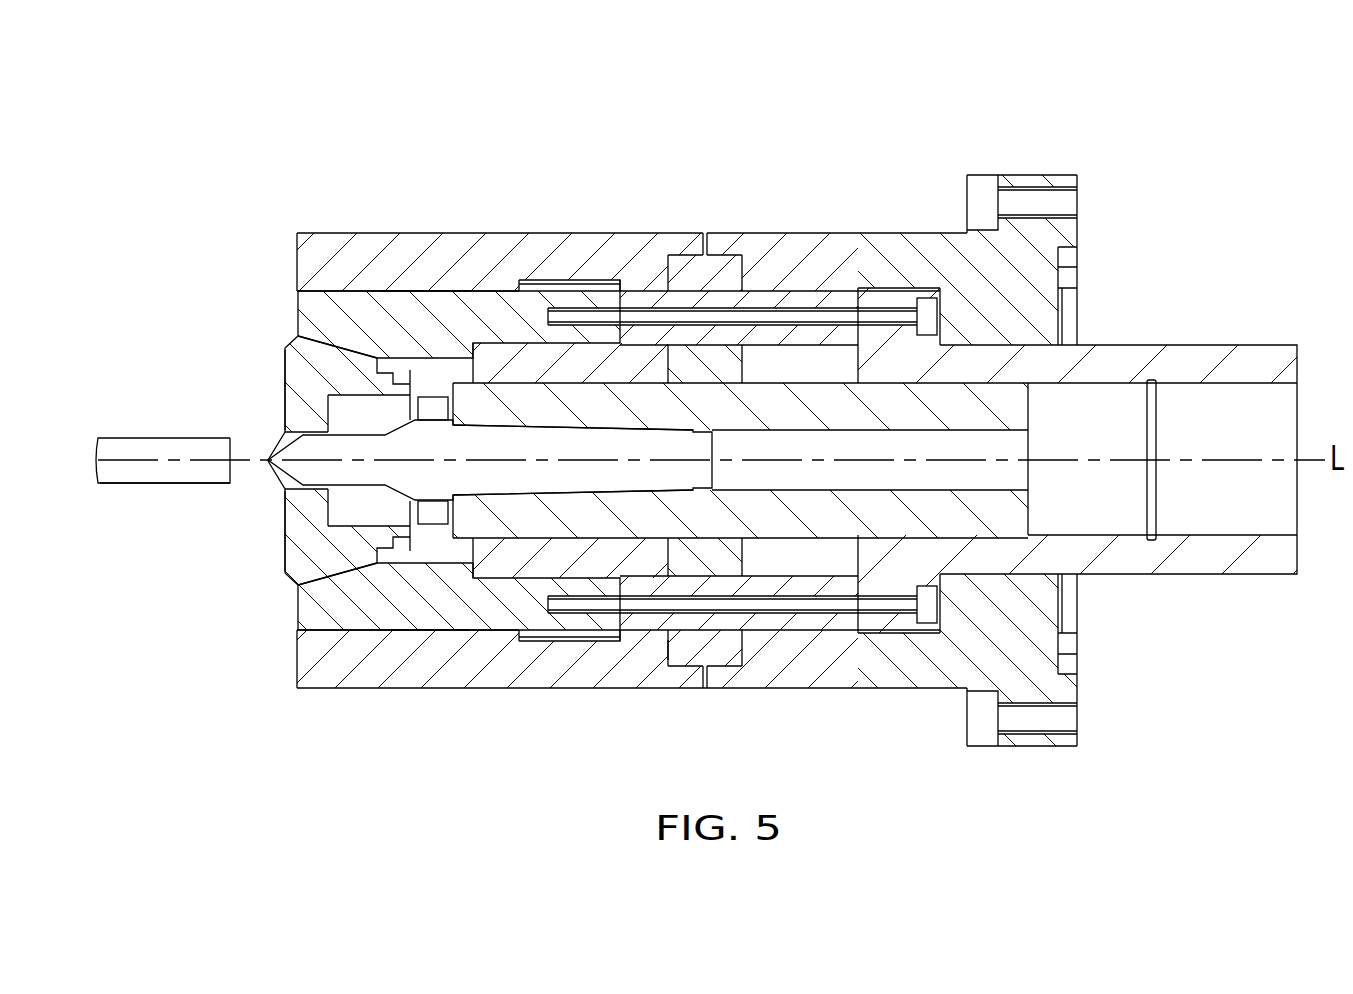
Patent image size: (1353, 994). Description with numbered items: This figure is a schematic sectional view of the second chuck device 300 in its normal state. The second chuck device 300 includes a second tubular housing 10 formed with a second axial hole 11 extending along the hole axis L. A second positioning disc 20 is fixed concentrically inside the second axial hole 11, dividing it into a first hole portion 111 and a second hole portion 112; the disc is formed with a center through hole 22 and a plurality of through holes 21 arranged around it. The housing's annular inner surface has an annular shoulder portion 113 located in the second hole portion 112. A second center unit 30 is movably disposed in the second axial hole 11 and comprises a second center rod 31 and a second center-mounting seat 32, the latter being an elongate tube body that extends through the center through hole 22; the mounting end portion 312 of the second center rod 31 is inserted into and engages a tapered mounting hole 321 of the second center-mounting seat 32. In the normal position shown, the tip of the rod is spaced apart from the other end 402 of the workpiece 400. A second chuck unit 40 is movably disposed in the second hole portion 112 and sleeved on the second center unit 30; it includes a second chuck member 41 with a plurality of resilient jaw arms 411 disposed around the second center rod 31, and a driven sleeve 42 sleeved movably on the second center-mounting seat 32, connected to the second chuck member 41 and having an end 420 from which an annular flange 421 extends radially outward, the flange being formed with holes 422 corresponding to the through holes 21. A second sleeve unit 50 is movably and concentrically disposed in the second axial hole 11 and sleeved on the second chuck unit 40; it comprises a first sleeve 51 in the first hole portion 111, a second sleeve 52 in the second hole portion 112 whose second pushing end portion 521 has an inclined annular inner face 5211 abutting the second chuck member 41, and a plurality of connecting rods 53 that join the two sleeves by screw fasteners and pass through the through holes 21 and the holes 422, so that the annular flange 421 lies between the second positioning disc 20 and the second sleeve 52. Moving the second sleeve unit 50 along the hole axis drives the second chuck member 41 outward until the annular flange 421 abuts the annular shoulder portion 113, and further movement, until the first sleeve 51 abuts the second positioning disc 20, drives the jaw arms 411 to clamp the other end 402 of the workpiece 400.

The second chuck device 300 is at (1083, 163).
The second tubular housing 10 is at (632, 404).
The second axial hole 11 is at (951, 427).
The first hole portion 111 is at (910, 288).
The second hole portion 112 is at (487, 287).
The annular shoulder portion 113 is at (547, 283).
The second positioning disc 20 is at (733, 396).
The through holes 21 is at (718, 290).
The center through hole 22 is at (723, 363).
The second center unit 30 is at (473, 492).
The second center rod 31 is at (403, 423).
The mounting end portion 312 is at (533, 525).
The second center-mounting seat 32 is at (740, 572).
The tapered mounting hole 321 is at (597, 540).
The second chuck unit 40 is at (287, 443).
The second chuck member 41 is at (282, 373).
The resilient jaw arms 411 is at (303, 403).
The driven sleeve 42 is at (665, 442).
The end 420 is at (652, 558).
The annular flange 421 is at (637, 285).
The holes 422 is at (680, 660).
The second sleeve unit 50 is at (441, 459).
The first sleeve 51 is at (1197, 352).
The second sleeve 52 is at (427, 308).
The second pushing end portion 521 is at (343, 313).
The inclined annular inner face 5211 is at (347, 573).
The connecting rods 53 is at (852, 300).
The workpiece 400 is at (163, 455).
The other end of the workpiece 402 is at (212, 483).